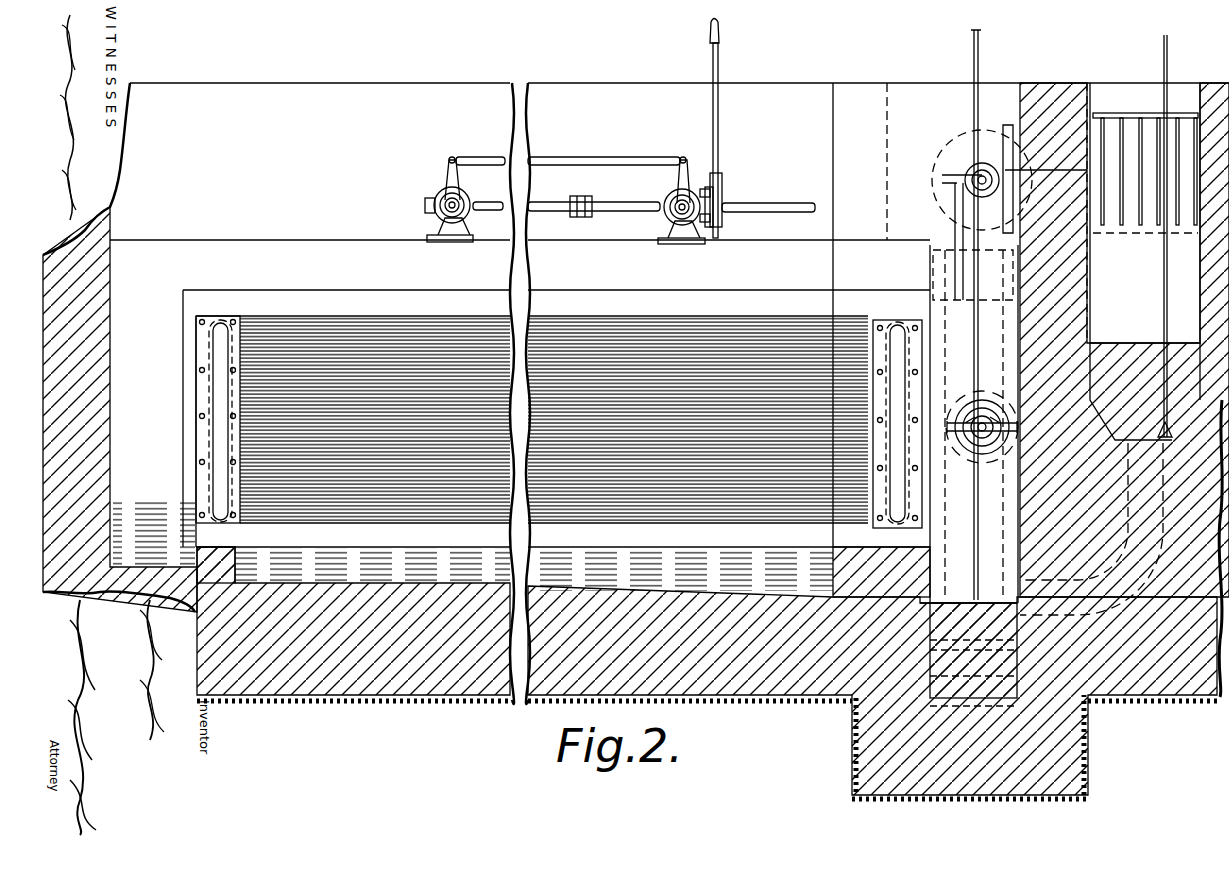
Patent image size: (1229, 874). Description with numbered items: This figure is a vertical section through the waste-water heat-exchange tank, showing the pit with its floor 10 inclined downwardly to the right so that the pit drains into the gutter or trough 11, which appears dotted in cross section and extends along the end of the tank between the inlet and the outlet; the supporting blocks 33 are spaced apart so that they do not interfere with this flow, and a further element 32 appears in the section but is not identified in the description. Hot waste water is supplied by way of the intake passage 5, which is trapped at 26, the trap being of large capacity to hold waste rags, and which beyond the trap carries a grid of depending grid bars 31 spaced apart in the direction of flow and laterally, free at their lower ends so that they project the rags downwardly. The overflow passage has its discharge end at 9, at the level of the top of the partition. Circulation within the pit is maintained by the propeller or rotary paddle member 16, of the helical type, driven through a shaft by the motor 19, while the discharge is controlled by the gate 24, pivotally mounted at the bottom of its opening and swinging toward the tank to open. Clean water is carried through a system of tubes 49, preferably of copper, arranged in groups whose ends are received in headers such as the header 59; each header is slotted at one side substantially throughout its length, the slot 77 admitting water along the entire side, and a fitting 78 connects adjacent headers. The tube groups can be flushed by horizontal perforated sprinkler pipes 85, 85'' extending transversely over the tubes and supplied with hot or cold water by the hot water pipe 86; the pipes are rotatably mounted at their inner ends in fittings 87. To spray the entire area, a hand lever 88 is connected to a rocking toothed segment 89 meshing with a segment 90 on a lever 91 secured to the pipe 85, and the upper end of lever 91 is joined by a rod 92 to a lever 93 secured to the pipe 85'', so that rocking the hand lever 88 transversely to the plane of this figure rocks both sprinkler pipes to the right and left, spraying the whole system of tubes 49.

The intake passage 5 is at (1195, 228).
The discharge end of overflow passage 9 is at (565, 202).
The floor of the pit 10 is at (598, 590).
The gutter or trough 11 is at (933, 698).
The propeller paddle 16 is at (970, 462).
The motor 19 is at (950, 146).
The gate 24 is at (926, 290).
The trap 26 is at (1197, 387).
The grid bars 31 is at (1132, 147).
The support 32 is at (232, 547).
The supporting blocks 33 is at (838, 562).
The tubes 49 is at (453, 350).
The header 59 is at (598, 312).
The slot 77 is at (218, 340).
The fitting 78 is at (207, 350).
The sprinkler pipe 85 is at (681, 247).
The sprinkler pipe 85'' is at (450, 246).
The hot water pipe 86 is at (795, 204).
The fittings 87 is at (438, 192).
The hand lever 88 is at (719, 45).
The rocking toothed segment 89 is at (467, 160).
The segment 90 is at (712, 180).
The lever 91 is at (672, 165).
The rod 92 is at (598, 160).
The lever 93 is at (450, 162).